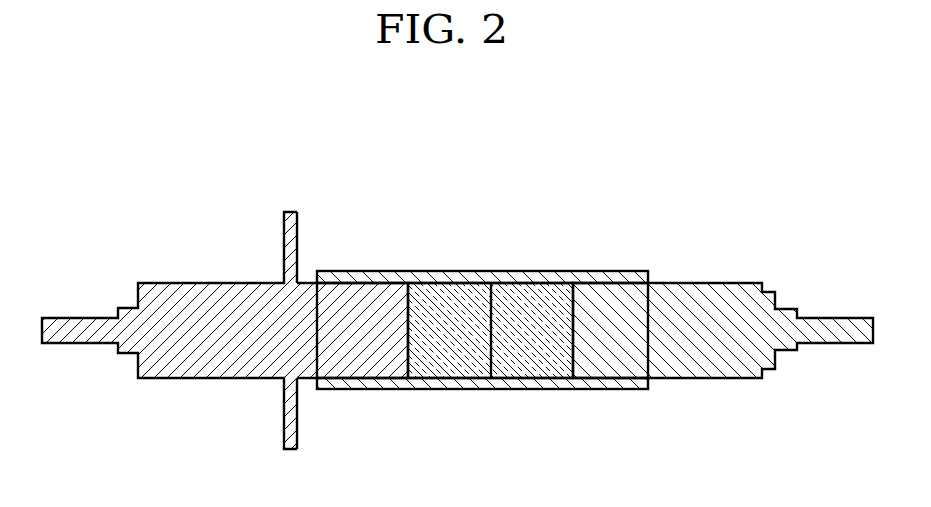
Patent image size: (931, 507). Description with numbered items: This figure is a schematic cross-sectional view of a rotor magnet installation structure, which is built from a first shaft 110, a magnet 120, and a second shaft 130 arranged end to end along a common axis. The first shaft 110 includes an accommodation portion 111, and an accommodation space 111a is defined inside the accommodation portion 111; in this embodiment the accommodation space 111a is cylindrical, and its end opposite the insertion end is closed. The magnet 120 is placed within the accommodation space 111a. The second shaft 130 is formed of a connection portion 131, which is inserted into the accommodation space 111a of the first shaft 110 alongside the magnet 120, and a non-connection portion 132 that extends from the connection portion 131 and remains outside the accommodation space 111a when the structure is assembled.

The first shaft 110 is at (702, 298).
The accommodation portion 111 is at (537, 278).
The accommodation space 111a is at (440, 283).
The magnet 120 is at (520, 370).
The second shaft 130 is at (225, 288).
The connection portion 131 is at (352, 273).
The non-connection portion 132 is at (230, 308).